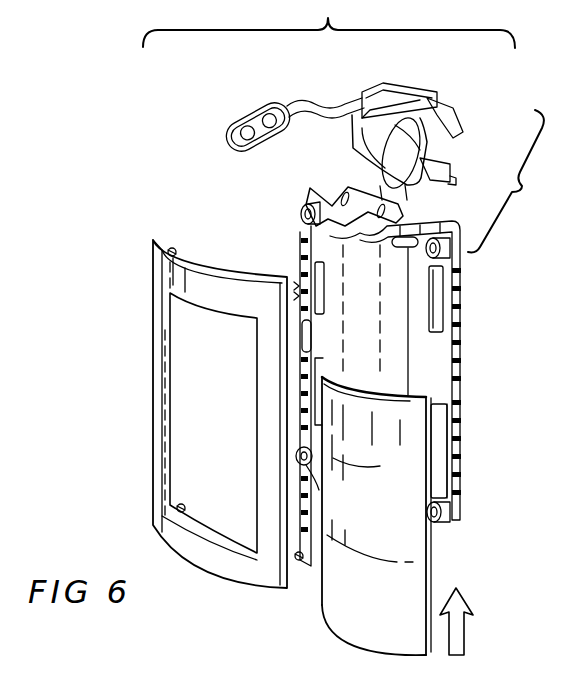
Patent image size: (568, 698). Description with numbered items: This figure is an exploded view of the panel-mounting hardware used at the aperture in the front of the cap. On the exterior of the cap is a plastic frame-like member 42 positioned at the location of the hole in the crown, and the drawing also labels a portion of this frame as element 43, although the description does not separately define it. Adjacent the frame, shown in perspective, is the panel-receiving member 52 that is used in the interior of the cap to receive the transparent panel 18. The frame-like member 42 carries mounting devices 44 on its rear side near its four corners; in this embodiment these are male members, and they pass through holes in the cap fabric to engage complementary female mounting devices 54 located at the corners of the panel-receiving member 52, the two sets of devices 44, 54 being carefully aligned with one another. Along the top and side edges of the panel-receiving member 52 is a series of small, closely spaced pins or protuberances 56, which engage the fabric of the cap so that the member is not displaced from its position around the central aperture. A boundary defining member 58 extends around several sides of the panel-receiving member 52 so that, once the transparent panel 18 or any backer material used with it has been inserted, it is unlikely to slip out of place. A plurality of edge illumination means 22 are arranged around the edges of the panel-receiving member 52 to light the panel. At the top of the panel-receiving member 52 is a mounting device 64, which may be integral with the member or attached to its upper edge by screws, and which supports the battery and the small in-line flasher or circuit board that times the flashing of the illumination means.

The transparent panel 18 is at (376, 628).
The edge illumination means 22 is at (447, 362).
The frame-like member 42 is at (207, 565).
The window opening 43 is at (170, 368).
The mounting devices 44 is at (175, 250).
The panel-receiving member 52 is at (462, 462).
The complementary mounting devices 54 is at (300, 213).
The pins or protuberances 56 is at (458, 427).
The boundary defining member 58 is at (440, 316).
The mounting device 64 is at (424, 86).